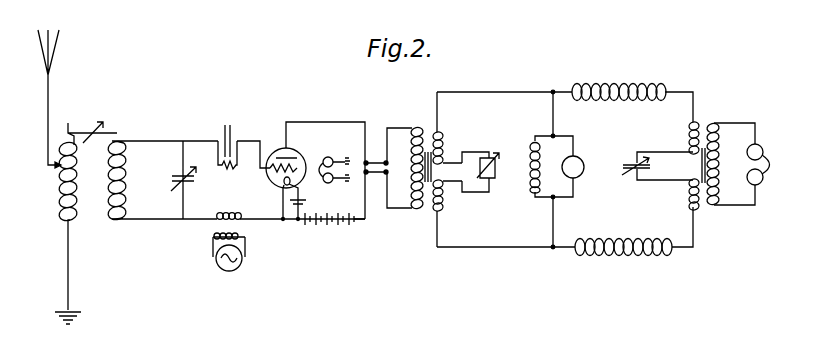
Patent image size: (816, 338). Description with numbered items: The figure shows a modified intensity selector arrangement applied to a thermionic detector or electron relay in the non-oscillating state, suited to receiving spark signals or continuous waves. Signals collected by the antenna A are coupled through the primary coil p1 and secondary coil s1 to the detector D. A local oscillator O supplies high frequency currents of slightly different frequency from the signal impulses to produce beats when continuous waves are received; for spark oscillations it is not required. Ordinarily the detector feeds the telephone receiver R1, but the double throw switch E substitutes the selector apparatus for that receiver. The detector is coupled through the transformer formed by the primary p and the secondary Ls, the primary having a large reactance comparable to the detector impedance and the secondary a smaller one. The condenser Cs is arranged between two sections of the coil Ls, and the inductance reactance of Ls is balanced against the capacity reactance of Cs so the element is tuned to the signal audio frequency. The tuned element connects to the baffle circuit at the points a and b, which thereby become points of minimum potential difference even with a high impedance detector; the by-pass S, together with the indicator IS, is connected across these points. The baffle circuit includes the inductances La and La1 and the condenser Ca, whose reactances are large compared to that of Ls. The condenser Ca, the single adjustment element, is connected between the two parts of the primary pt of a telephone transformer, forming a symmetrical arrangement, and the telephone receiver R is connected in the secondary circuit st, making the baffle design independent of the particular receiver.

The antenna A is at (36, 99).
The primary coil of receiving transformer p1 is at (74, 223).
The secondary coil of receiving transformer s1 is at (162, 180).
The detector D is at (309, 171).
The telephone receiver R1 is at (333, 159).
The double throw switch E is at (376, 157).
The local oscillator O is at (229, 264).
The primary coil p is at (409, 167).
The secondary coil Ls is at (448, 169).
The condenser Cs is at (490, 172).
The by-pass S is at (540, 168).
The indicator IS is at (573, 167).
The point a is at (550, 82).
The point b is at (551, 259).
The inductance of baffle circuit La is at (619, 78).
The inductance coil La1 is at (623, 261).
The condenser Ca is at (642, 167).
The primary of telephone transformer pt is at (684, 166).
The secondary circuit of telephone transformer st is at (730, 163).
The telephone receiver R is at (766, 158).